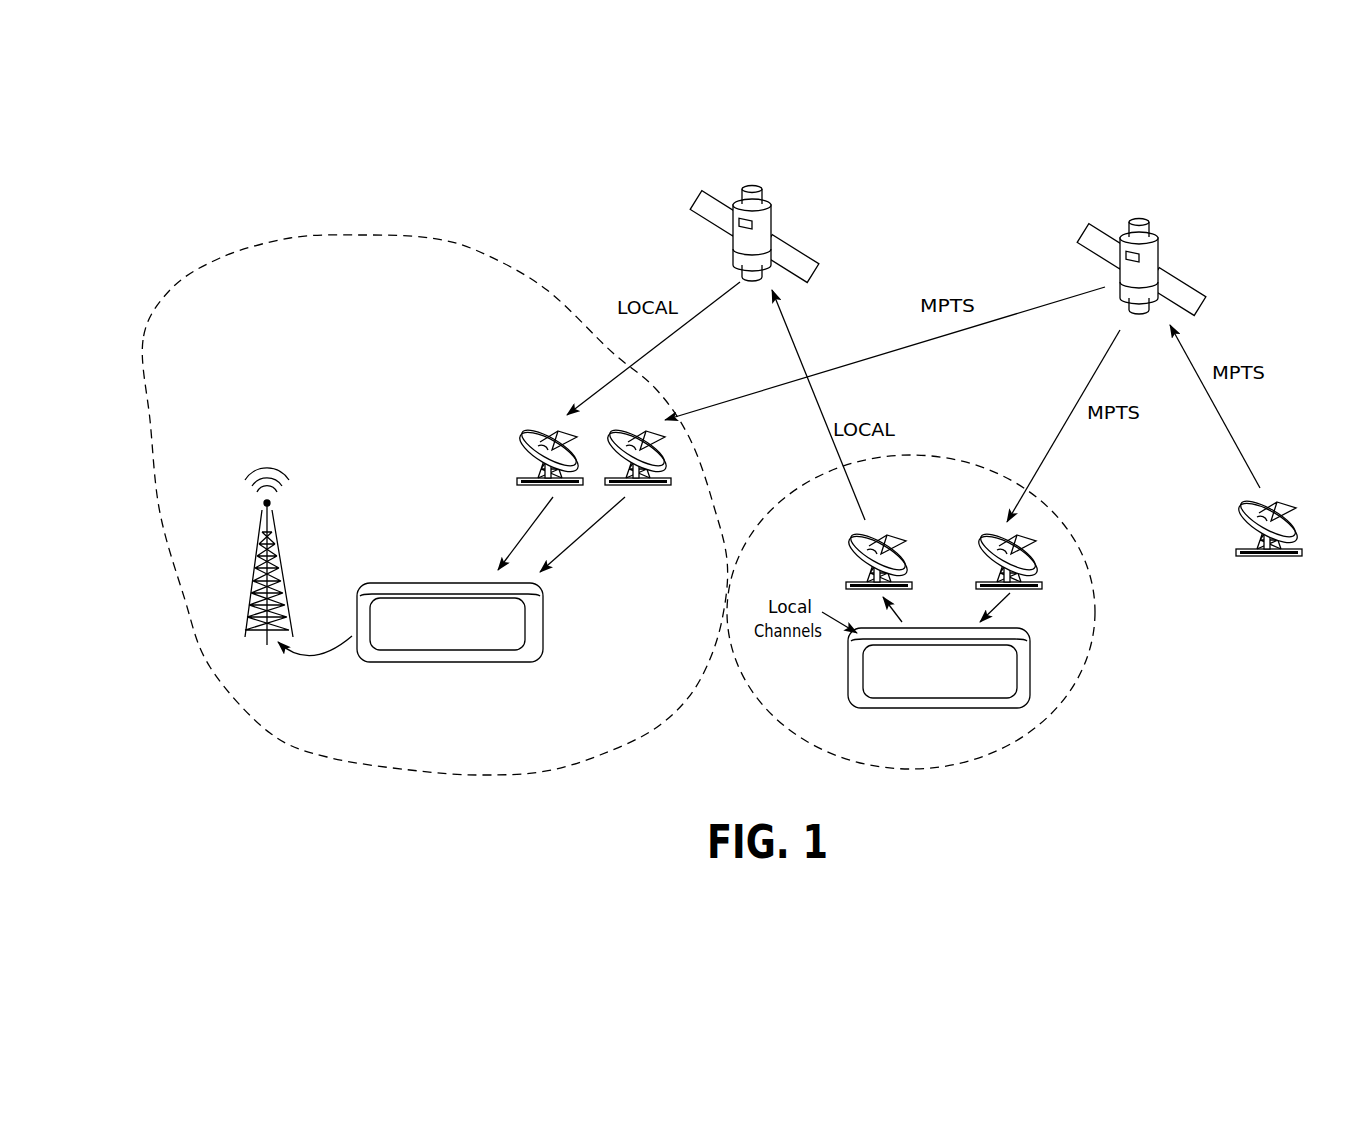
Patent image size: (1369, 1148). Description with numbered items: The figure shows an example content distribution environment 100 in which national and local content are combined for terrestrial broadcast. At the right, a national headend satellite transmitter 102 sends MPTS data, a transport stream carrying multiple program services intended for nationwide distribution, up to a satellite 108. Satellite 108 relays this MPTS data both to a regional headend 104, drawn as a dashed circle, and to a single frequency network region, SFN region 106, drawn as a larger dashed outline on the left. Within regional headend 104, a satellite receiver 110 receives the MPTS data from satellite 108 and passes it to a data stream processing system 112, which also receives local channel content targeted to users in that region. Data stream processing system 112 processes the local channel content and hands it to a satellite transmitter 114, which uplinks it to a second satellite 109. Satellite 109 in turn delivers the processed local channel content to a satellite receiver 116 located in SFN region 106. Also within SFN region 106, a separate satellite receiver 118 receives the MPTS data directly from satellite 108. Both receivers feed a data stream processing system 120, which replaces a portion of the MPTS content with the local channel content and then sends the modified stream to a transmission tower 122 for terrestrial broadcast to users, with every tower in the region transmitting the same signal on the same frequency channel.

The content distribution environment 100 is at (905, 127).
The national headend satellite transmitter 102 is at (1278, 502).
The regional headend 104 is at (1033, 747).
The single frequency network (SFN) region 106 is at (412, 765).
The satellite 108 is at (1156, 241).
The satellite 109 is at (777, 213).
The satellite receiver 110 is at (1027, 533).
The data stream processing system 112 is at (1062, 666).
The satellite transmitter 114 is at (897, 533).
The satellite receiver 116 is at (533, 430).
The satellite receiver 118 is at (622, 432).
The data stream processing system 120 is at (544, 621).
The transmission tower 122 is at (263, 533).